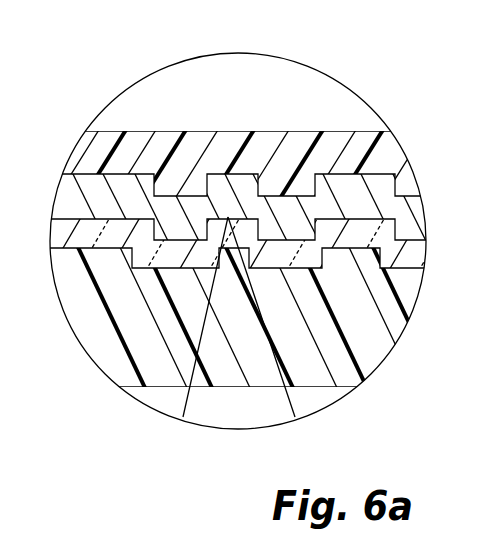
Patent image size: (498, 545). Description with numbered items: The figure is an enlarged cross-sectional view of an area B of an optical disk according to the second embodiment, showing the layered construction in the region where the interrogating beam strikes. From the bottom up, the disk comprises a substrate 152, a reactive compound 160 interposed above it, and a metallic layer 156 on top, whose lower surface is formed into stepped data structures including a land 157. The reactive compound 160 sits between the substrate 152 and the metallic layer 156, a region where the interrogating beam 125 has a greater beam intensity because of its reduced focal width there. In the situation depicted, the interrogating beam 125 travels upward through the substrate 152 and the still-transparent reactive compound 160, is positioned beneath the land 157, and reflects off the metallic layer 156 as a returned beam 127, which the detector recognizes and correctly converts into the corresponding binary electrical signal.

The area of the optical disk B is at (238, 54).
The metallic layer 156 is at (403, 92).
The land 157 is at (247, 215).
The reactive compound 160 is at (418, 253).
The substrate 152 is at (120, 363).
The interrogating beam 125 is at (192, 400).
The returned beam 127 is at (292, 400).